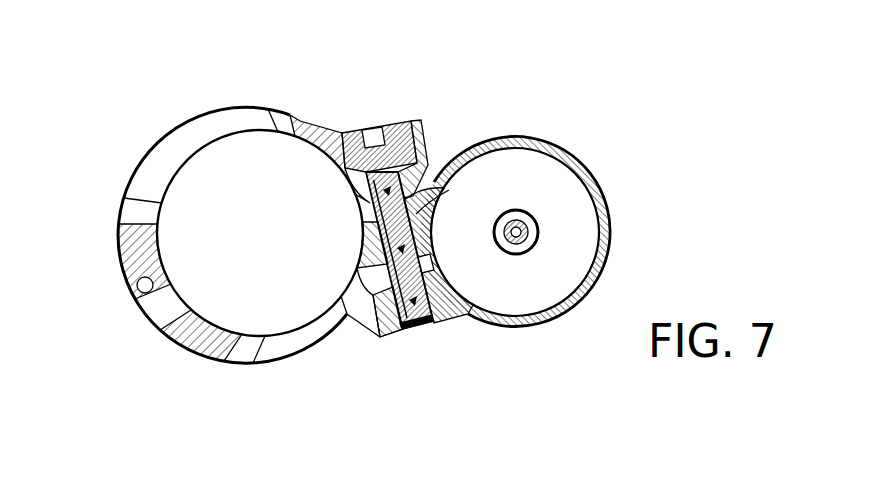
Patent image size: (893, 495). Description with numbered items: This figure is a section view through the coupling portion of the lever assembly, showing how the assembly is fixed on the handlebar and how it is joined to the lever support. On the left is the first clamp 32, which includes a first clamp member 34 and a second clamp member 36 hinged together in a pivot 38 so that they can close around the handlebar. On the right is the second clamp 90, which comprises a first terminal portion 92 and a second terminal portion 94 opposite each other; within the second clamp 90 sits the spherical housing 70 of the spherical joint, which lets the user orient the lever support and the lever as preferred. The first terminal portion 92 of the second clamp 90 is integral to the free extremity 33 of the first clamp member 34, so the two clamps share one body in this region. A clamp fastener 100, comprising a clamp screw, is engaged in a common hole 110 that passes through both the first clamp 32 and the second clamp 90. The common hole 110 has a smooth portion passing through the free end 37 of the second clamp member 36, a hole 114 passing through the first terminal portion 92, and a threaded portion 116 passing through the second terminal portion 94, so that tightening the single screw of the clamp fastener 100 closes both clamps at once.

The first clamp 32 is at (233, 245).
The free extremity 33 is at (370, 263).
The first clamp member 34 is at (273, 350).
The second clamp member 36 is at (193, 137).
The free end 37 is at (423, 120).
The pivot 38 is at (137, 288).
The spherical housing 70 is at (520, 246).
The second clamp 90 is at (533, 335).
The first terminal portion 92 is at (440, 223).
The second terminal portion 94 is at (390, 320).
The clamp fastener 100 is at (353, 138).
The common hole 110 is at (344, 210).
The hole 114 is at (405, 247).
The threaded portion 116 is at (415, 327).